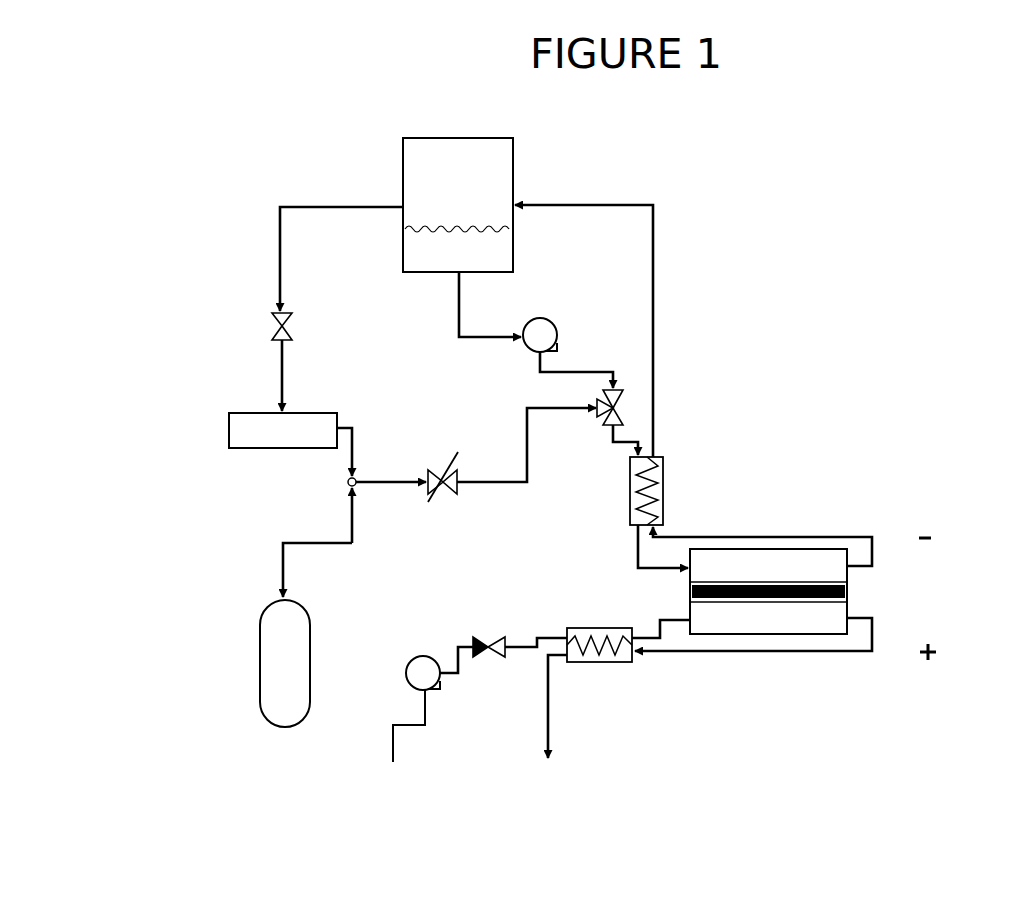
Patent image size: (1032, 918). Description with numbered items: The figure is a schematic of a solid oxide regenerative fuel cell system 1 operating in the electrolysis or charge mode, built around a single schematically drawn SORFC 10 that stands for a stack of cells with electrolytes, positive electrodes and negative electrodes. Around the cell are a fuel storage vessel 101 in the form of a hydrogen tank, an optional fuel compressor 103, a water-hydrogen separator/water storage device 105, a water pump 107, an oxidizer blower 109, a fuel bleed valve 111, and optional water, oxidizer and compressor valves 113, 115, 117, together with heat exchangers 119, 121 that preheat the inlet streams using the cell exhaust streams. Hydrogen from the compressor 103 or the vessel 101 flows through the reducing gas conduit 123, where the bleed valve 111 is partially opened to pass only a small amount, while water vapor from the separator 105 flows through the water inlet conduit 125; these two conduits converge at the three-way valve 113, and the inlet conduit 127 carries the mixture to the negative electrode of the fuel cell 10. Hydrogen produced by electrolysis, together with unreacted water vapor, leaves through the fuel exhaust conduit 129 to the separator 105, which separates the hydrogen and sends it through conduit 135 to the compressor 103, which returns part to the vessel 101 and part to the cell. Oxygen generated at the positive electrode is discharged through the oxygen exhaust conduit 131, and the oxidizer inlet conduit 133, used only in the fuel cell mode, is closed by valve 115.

The SORFC system 1 is at (914, 320).
The SORFC 10 is at (833, 607).
The fuel storage vessel 101 is at (263, 732).
The fuel compressor 103 is at (233, 450).
The water-hydrogen separator/water storage device 105 is at (518, 150).
The water pump 107 is at (547, 313).
The oxidizer blower 109 is at (435, 700).
The fuel bleed valve 111 is at (447, 450).
The water valve 113 is at (607, 432).
The oxidizer valve 115 is at (493, 625).
The compressor valve 117 is at (273, 315).
The heat exchanger 119 is at (665, 500).
The heat exchanger 121 is at (610, 670).
The reducing gas conduit 123 is at (478, 492).
The water inlet conduit 125 is at (452, 287).
The inlet conduit 127 is at (638, 547).
The fuel exhaust conduit 129 is at (663, 327).
The oxygen exhaust conduit 131 is at (713, 653).
The oxidizer inlet conduit 133 is at (667, 610).
The conduit 135 is at (302, 200).